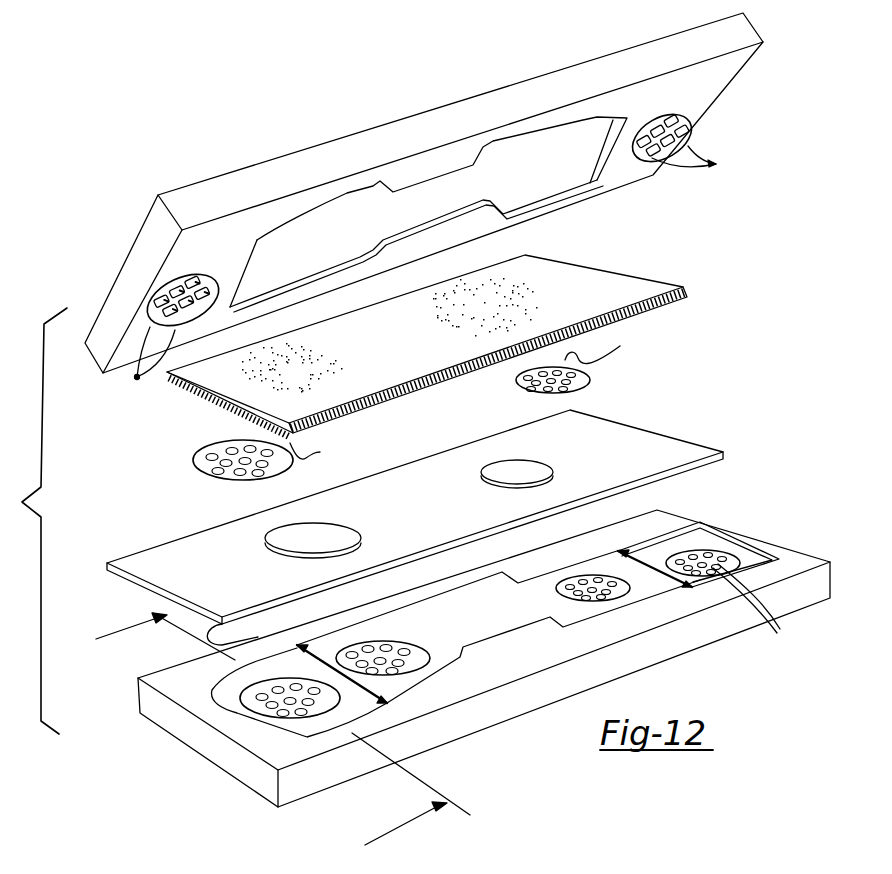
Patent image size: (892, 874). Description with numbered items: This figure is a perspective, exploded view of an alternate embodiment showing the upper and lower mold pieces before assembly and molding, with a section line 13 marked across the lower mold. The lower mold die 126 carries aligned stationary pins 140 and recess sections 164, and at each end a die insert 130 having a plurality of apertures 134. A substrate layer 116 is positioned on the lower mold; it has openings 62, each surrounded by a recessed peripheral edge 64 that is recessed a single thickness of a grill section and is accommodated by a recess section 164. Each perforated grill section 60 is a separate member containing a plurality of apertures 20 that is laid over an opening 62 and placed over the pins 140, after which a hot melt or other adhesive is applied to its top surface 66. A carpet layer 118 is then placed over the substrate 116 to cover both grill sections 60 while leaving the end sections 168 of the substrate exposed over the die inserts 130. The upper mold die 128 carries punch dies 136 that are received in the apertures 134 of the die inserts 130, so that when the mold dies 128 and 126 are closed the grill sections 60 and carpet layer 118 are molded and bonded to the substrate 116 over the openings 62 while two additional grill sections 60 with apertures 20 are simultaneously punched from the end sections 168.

The upper mold die 128 is at (367, 150).
The punch die 136 is at (429, 252).
The carpet layer 118 is at (630, 283).
The perforated grill section 60 is at (196, 458).
The aperture 20 is at (237, 446).
The top surface 66 is at (466, 397).
The substrate layer 116 is at (668, 442).
The recessed peripheral edge 64 is at (340, 524).
The opening 62 is at (290, 545).
The end section 168 is at (244, 630).
The lower mold die 126 is at (770, 552).
The die insert 130 is at (713, 553).
The stationary pin 140 is at (405, 640).
The recess section 164 is at (352, 641).
The aperture 134 is at (761, 605).
The section line 13- 13 is at (263, 743).